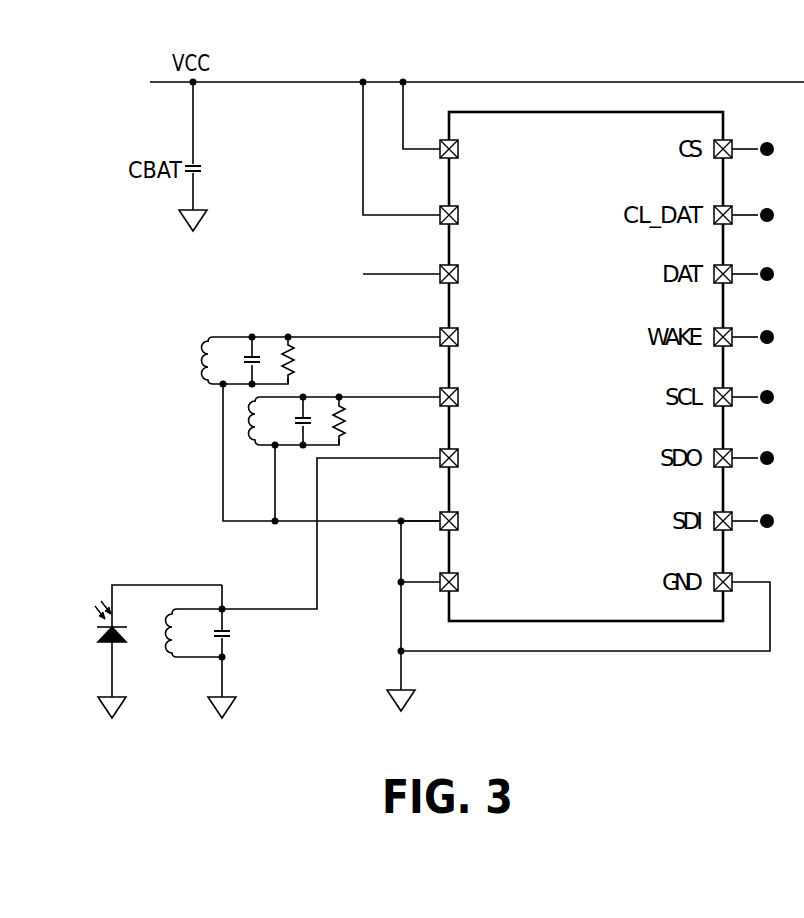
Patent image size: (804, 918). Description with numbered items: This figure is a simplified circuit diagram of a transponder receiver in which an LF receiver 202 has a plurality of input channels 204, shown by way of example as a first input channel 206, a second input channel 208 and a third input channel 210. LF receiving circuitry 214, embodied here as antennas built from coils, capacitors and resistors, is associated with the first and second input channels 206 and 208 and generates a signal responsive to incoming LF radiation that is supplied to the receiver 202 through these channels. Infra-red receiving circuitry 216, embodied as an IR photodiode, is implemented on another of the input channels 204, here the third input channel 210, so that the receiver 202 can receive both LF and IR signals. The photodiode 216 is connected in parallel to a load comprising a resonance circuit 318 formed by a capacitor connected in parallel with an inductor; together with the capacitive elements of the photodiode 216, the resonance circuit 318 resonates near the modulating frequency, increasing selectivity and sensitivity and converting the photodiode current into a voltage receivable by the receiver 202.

The receiver 202 is at (613, 111).
The plurality of input channels 204 is at (507, 370).
The first input channel 206 is at (440, 331).
The second input channel 208 is at (440, 391).
The third input channel 210 is at (440, 453).
The LF receiving circuitry 214 is at (203, 360).
The infra-red receiving circuitry 216 is at (107, 643).
The resonance circuit 318 is at (243, 658).